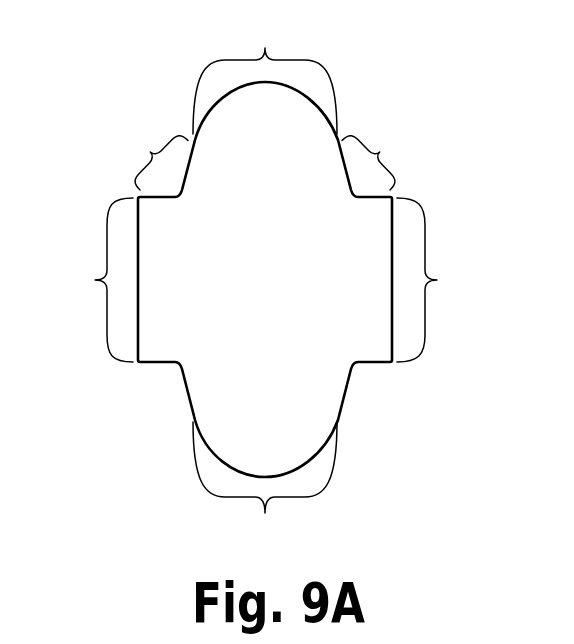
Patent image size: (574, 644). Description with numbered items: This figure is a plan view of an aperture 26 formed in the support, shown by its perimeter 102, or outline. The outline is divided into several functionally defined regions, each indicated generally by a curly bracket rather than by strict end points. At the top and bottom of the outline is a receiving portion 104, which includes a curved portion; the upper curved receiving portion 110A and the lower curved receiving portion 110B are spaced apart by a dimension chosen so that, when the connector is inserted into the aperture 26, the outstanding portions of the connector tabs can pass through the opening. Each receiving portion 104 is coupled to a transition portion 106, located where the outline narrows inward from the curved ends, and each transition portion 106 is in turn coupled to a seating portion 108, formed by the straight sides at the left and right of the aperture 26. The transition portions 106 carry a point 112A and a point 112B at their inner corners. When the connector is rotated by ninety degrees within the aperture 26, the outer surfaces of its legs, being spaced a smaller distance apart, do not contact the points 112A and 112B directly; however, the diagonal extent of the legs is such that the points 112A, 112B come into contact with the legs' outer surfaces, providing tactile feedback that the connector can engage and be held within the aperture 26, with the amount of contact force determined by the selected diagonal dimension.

The aperture 26 is at (143, 402).
The perimeter 102 is at (343, 403).
The receiving portion 104 is at (265, 282).
The transition portion 106 is at (263, 158).
The seating portion 108 is at (264, 280).
The receiving portion (curved portion) 110A is at (253, 84).
The receiving portion (curved portion) 110B is at (244, 476).
The point 112A is at (348, 197).
The point 112B is at (179, 367).